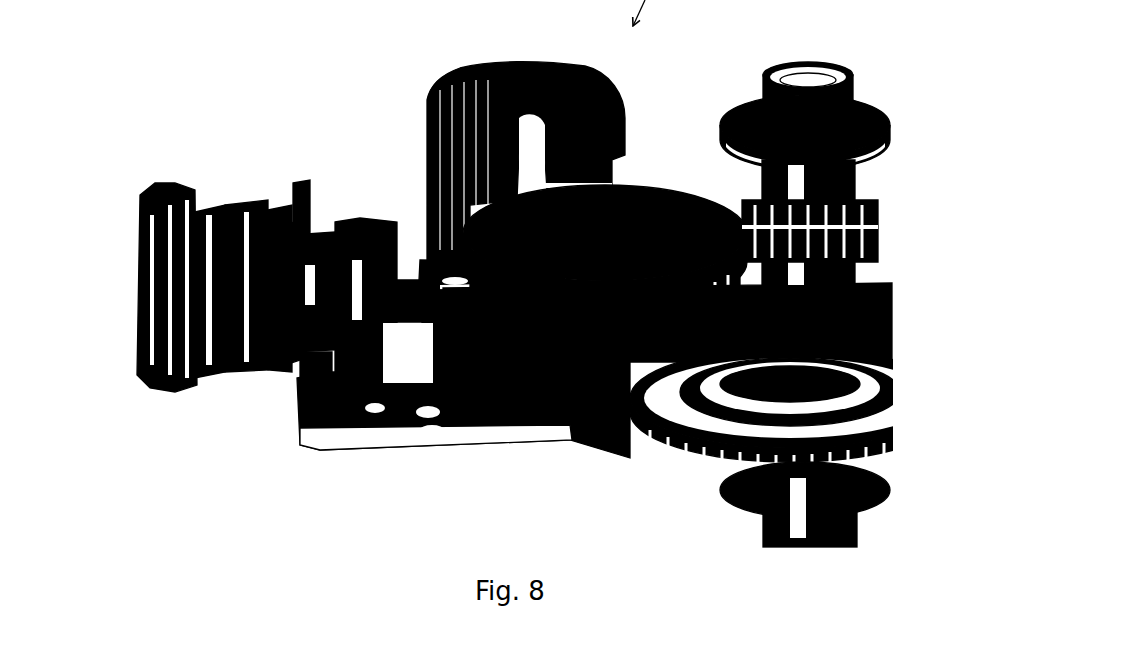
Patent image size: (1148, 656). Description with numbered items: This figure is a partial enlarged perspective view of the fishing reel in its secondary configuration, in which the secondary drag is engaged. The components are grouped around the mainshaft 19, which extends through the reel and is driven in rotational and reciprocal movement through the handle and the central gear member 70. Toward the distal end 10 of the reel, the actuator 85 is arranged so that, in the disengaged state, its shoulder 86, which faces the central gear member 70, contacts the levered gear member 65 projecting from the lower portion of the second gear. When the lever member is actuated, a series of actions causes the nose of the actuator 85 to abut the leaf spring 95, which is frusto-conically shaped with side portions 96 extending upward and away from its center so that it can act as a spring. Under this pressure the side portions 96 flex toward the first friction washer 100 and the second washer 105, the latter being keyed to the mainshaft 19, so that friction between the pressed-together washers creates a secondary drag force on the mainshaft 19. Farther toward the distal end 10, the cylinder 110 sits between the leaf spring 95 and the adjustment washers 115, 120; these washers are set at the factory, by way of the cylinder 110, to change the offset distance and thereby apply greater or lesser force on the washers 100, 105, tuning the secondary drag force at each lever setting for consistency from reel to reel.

The distal end 10 is at (86, 72).
The mainshaft 19 is at (427, 272).
The levered gear member 65 is at (505, 430).
The central gear member 70 is at (700, 470).
The actuator 85 is at (437, 460).
The shoulder 86 is at (425, 390).
The leaf spring 95 is at (275, 388).
The side portions 96 is at (305, 232).
The first friction washer 100 is at (250, 375).
The second washer 105 is at (225, 370).
The cylinder 110 is at (212, 250).
The adjustment washer 115 is at (195, 185).
The adjustment washer 120 is at (165, 185).